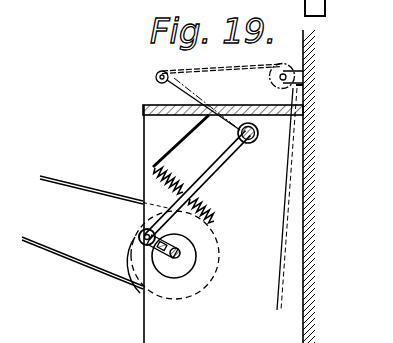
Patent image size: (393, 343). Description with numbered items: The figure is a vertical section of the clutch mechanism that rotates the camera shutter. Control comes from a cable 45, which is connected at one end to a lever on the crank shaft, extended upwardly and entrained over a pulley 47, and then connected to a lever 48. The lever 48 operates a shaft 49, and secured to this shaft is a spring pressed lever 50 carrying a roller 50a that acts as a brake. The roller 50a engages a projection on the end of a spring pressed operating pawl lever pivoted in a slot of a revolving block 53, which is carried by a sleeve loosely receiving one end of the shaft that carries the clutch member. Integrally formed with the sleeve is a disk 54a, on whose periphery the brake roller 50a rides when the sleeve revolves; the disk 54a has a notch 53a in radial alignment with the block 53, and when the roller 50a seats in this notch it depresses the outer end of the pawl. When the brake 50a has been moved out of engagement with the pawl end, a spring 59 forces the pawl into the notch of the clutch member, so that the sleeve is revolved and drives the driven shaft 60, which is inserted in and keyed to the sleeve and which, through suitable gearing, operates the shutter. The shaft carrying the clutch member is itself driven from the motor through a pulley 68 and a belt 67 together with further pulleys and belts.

The cable 45 is at (283, 252).
The pulley 47 is at (280, 82).
The lever 48 is at (185, 89).
The shaft 49 is at (252, 143).
The spring pressed lever 50 is at (215, 168).
The roller 50a is at (139, 235).
The revolving block 53 is at (161, 264).
The notch 53a is at (213, 214).
The disk 54a is at (190, 251).
The spring 59 is at (155, 263).
The driven shaft 60 is at (178, 258).
The belt 67 is at (79, 264).
The pulley 68 is at (133, 244).